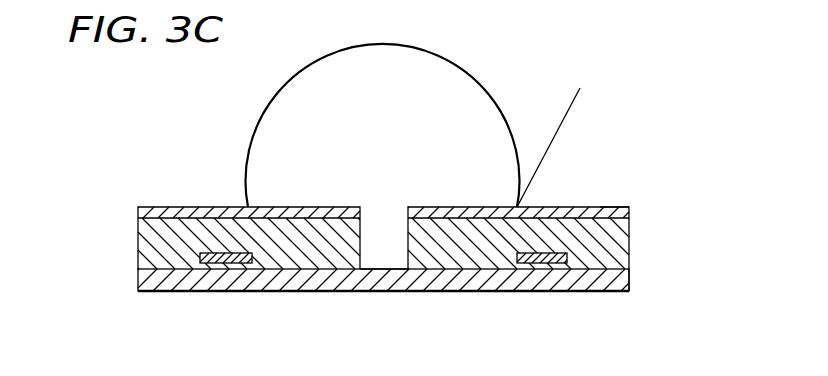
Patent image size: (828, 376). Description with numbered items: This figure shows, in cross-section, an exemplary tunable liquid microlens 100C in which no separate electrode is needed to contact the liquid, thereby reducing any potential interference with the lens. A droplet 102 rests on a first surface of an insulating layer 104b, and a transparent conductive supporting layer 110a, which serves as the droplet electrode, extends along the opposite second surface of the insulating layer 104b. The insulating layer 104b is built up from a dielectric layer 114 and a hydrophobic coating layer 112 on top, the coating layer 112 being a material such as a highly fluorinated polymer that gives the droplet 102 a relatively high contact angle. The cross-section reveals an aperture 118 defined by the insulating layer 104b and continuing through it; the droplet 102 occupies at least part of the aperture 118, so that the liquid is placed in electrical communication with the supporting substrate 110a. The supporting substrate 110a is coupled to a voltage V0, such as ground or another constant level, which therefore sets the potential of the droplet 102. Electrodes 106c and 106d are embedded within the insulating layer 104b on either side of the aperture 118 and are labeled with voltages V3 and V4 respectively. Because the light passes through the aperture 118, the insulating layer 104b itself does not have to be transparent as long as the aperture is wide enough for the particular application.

The tunable liquid microlens 100C is at (651, 81).
The droplet 102 is at (259, 121).
The insulating layer 104b is at (644, 207).
The left electrode 106c is at (228, 263).
The right electrode 106d is at (534, 263).
The supporting substrate 110a is at (474, 284).
The hydrophobic coating layer 112 is at (622, 207).
The dielectric layer 114 is at (590, 207).
The aperture 118 is at (380, 254).
The voltage V3 is at (206, 257).
The voltage V4 is at (546, 258).
The voltage Vo V0 is at (629, 279).